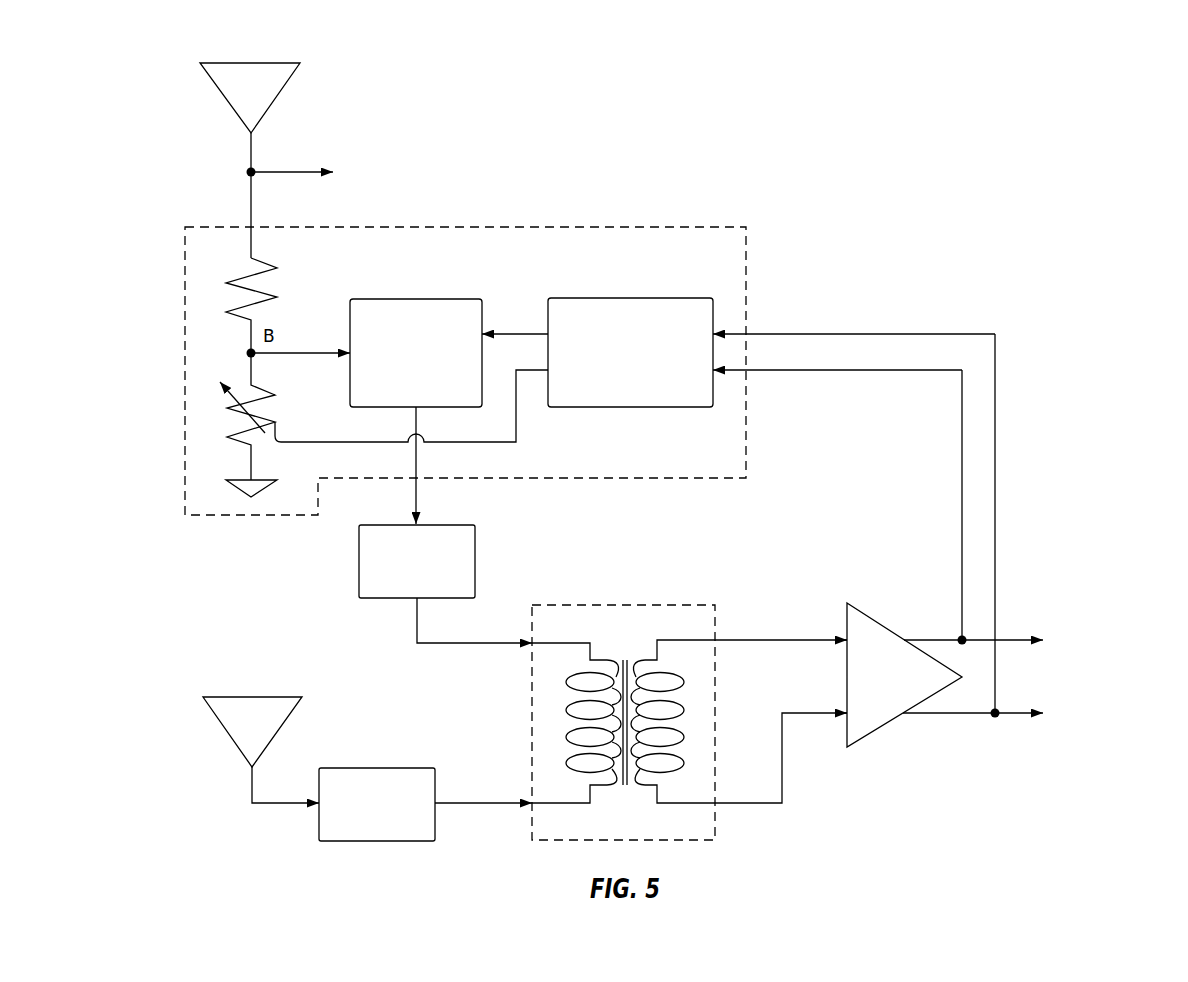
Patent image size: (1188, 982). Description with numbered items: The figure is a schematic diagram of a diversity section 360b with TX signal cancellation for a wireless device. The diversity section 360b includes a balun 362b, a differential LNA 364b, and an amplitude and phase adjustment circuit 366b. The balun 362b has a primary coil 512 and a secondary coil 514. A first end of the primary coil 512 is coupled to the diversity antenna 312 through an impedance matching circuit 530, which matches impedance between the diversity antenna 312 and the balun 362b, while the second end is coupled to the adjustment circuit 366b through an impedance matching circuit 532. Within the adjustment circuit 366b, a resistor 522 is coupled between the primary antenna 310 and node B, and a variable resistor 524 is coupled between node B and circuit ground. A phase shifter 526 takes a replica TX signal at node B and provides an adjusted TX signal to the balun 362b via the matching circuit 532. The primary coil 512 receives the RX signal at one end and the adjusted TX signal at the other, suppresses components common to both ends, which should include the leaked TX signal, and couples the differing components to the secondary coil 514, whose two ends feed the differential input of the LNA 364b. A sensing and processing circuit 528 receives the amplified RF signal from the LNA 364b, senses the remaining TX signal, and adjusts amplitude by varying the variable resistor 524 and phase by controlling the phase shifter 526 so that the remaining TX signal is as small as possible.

The primary antenna 310 is at (246, 63).
The diversity antenna 312 is at (248, 697).
The diversity section 360b is at (996, 220).
The balun 362b is at (689, 703).
The differential LNA 364b is at (887, 627).
The amplitude and phase adjustment circuit 366b is at (506, 227).
The primary coil 512 is at (586, 675).
The secondary coil 514 is at (664, 675).
The resistor 522 is at (243, 278).
The variable resistor 524 is at (270, 388).
The phase shifter 526 is at (390, 299).
The sensing and processing circuit 528 is at (660, 298).
The impedance matching circuit 530 is at (372, 768).
The impedance matching circuit 532 is at (433, 524).